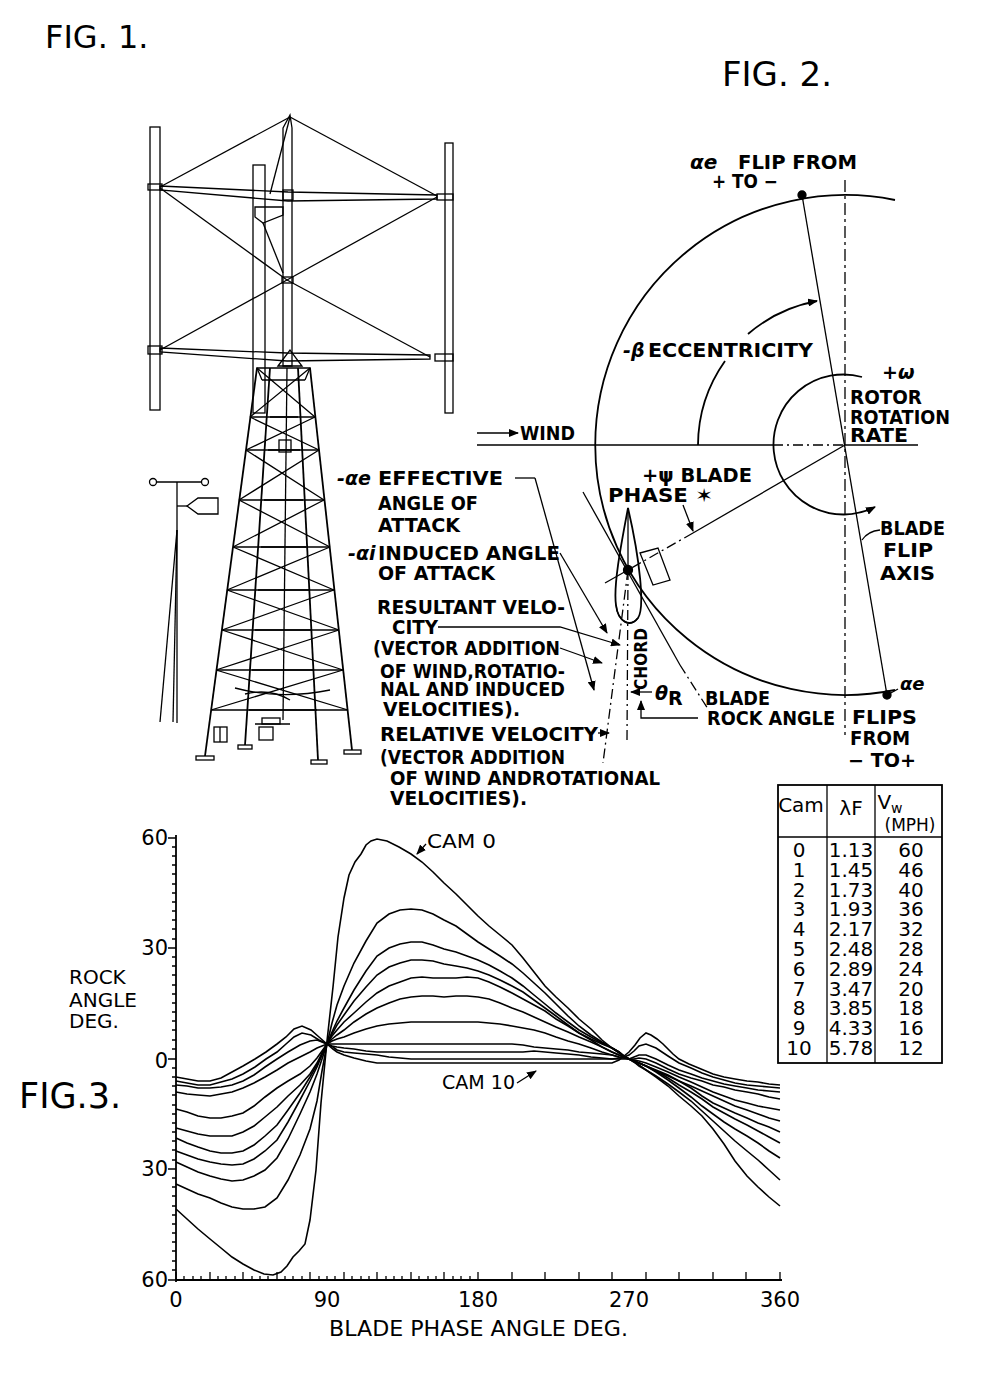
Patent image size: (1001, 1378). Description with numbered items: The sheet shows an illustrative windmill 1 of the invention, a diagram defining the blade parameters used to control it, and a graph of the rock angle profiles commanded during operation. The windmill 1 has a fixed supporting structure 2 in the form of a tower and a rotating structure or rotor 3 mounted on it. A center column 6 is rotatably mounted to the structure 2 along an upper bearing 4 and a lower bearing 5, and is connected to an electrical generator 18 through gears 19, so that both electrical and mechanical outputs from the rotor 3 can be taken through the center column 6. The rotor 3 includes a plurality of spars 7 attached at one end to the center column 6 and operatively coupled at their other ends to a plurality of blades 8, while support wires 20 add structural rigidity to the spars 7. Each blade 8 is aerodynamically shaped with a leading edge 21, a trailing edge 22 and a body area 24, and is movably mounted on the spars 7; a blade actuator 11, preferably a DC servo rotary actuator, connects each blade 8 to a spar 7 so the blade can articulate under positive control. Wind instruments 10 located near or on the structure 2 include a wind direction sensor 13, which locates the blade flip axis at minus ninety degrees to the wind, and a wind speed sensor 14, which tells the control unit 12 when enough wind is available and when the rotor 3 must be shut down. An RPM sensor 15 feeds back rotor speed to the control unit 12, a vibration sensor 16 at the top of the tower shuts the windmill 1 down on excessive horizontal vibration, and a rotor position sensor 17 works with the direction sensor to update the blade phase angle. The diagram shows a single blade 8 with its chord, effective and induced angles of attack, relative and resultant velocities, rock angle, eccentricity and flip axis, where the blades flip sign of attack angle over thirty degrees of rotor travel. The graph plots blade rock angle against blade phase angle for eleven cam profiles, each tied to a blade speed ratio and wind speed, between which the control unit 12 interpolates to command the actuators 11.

In FIG. 1, the windmill 1 is at (355, 104).
In FIG. 1, the supporting structure 2 is at (314, 453).
In FIG. 1, the rotor 3 is at (137, 250).
In FIG. 1, the upper bearing 4 is at (262, 379).
In FIG. 1, the lower bearing 5 is at (300, 690).
In FIG. 1, the center column 6 is at (268, 446).
In FIG. 1, the spars 7 is at (327, 195).
In FIG. 1, the blades 8 is at (158, 142).
In FIG. 1, the wind instruments 10 is at (158, 470).
In FIG. 1, the blade actuator 11 is at (166, 357).
In FIG. 1, the control unit 12 is at (214, 736).
In FIG. 1, the wind direction sensor 13 is at (216, 515).
In FIG. 1, the wind speed sensor 14 is at (207, 478).
In FIG. 1, the RPM sensor 15 is at (245, 694).
In FIG. 1, the vibration sensor 16 is at (306, 373).
In FIG. 1, the rotor position sensor 17 is at (303, 748).
In FIG. 1, the electrical generator 18 is at (258, 739).
In FIG. 1, the gears 19 is at (292, 737).
In FIG. 1, the support wires 20 is at (341, 142).
In FIG. 2, the leading edge 21 is at (643, 606).
In FIG. 2, the trailing edge 22 is at (632, 512).
In FIG. 2, the body area 24 is at (618, 567).